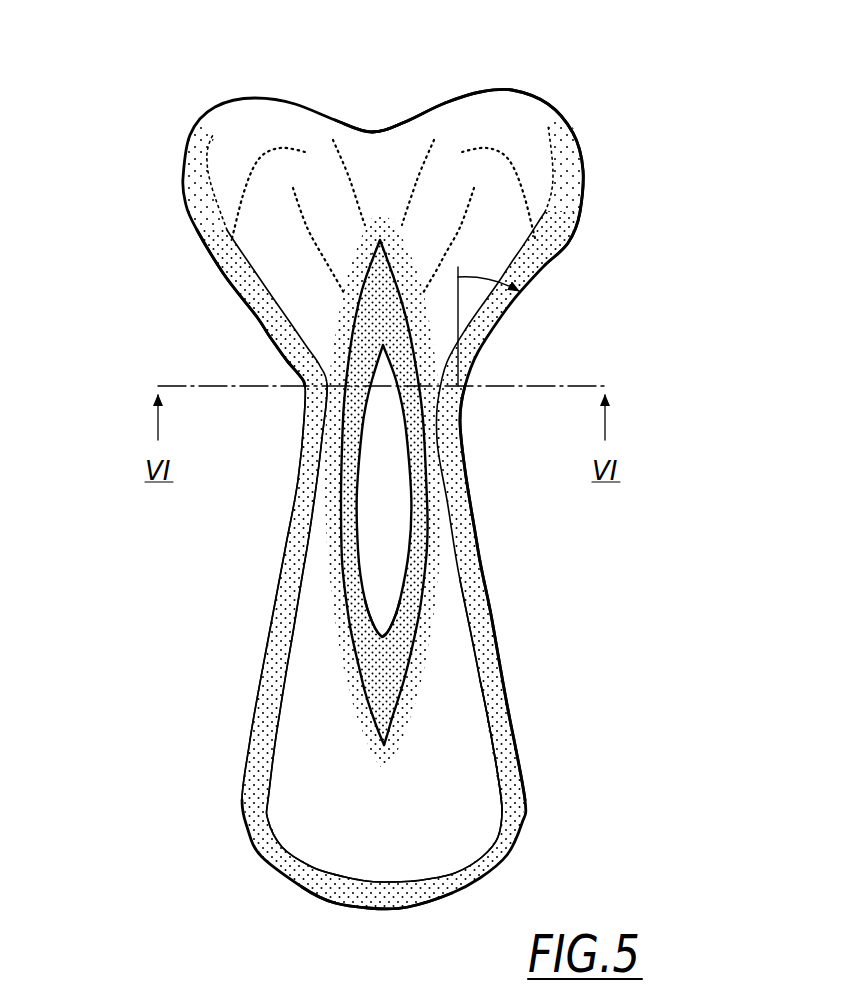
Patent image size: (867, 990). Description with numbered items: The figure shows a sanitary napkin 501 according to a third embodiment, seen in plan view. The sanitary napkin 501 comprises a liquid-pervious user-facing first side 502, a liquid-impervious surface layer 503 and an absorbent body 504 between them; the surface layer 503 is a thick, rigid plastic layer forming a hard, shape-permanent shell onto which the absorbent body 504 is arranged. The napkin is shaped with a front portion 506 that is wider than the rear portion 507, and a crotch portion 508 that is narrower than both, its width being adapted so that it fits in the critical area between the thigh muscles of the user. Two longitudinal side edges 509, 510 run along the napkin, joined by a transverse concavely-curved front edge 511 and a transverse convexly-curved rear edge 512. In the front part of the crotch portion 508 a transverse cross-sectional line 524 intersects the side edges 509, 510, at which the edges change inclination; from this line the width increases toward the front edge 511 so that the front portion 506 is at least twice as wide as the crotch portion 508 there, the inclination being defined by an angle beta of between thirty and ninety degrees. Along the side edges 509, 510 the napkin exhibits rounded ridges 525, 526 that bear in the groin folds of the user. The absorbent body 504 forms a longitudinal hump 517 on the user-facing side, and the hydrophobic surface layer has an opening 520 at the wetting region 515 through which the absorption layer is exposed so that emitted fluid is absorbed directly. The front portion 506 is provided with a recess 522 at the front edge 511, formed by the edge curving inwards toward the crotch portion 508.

The sanitary napkin 501 is at (632, 59).
The liquid-pervious user-facing first side 502 is at (471, 671).
The liquid-impervious surface layer 503 is at (503, 748).
The absorbent body 504 is at (320, 672).
The front portion 506 is at (523, 138).
The rear portion 507 is at (310, 817).
The crotch portion 508 is at (318, 366).
The longitudinal side edge 509 is at (291, 504).
The longitudinal side edge 510 is at (488, 543).
The front edge 511 is at (373, 130).
The rear edge 512 is at (354, 907).
The wetting region 515 is at (397, 483).
The hump 517 is at (370, 645).
The opening 520 is at (368, 560).
The recess 522 is at (418, 128).
The cross-sectional line 524 is at (498, 380).
The rounded ridge 525 is at (313, 437).
The rounded ridge 526 is at (497, 713).